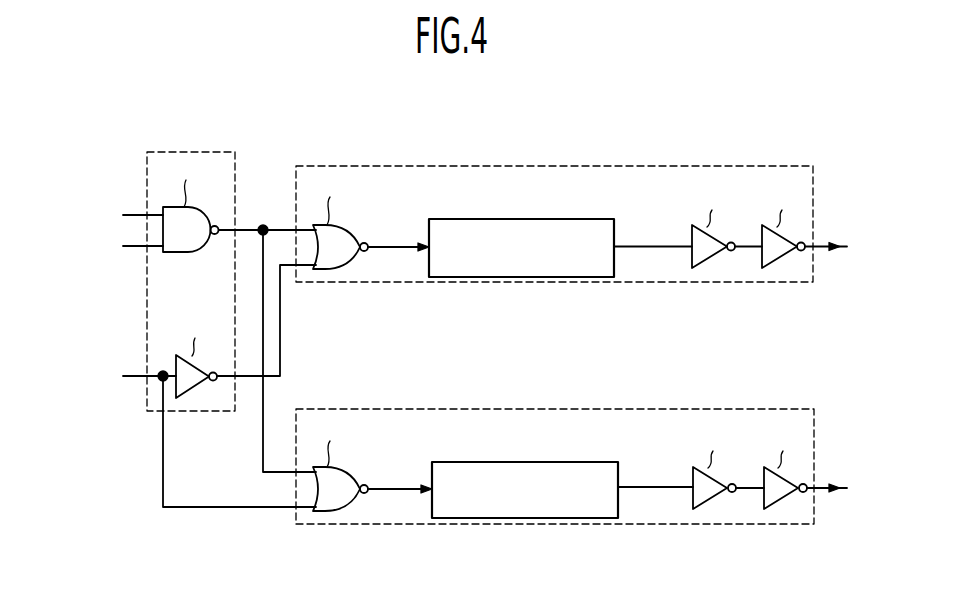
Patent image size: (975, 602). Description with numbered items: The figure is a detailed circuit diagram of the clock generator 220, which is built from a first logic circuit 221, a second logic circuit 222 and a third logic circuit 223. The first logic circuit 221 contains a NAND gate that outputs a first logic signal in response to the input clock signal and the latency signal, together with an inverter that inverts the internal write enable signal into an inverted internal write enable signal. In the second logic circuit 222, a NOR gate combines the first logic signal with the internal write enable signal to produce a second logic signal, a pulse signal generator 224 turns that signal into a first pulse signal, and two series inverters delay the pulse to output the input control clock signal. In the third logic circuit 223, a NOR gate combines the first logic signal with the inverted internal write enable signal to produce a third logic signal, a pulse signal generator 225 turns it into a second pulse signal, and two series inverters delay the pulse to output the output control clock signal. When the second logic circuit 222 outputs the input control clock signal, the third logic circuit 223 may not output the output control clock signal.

The clock generator 220 is at (140, 514).
The first logic circuit 221 is at (190, 152).
The second logic circuit 222 is at (574, 410).
The third logic circuit 223 is at (572, 166).
The pulse signal generator 224 is at (543, 462).
The pulse signal generator 225 is at (538, 219).